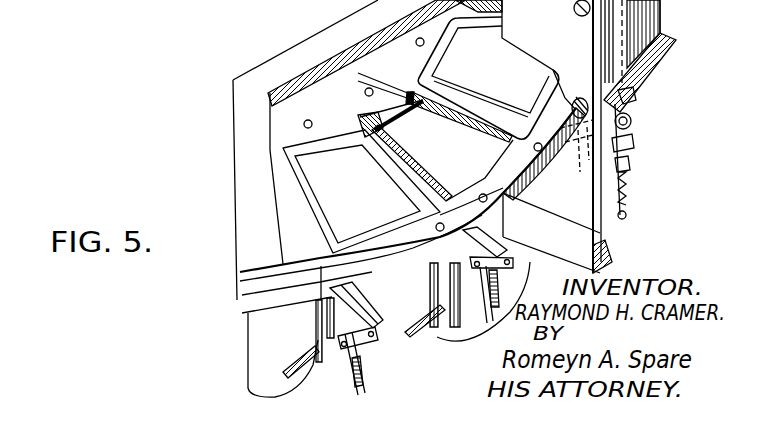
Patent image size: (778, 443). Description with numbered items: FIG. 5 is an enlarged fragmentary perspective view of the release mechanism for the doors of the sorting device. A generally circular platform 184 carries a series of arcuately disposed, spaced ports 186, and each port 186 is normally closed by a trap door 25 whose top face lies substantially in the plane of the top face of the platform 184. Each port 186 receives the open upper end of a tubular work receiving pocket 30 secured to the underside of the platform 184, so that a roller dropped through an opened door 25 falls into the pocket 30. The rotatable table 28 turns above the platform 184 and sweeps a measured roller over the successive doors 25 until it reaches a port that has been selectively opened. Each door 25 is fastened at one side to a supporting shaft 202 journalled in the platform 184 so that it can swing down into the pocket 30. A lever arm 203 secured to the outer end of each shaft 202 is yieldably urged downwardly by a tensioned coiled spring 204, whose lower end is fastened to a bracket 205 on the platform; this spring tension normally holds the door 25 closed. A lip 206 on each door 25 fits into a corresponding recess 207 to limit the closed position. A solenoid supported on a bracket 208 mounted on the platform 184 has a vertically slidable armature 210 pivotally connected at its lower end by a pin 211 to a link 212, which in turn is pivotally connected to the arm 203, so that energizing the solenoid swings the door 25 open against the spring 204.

The trap door 25 is at (417, 155).
The rotatable table 28 is at (254, 285).
The tubular work receiving pocket 30 is at (255, 335).
The platform 184 is at (290, 127).
The ports 186 is at (327, 150).
The supporting shaft 202 is at (370, 155).
The lever arm 203 is at (363, 344).
The tensioned coiled spring 204 is at (366, 372).
The bracket 205 is at (350, 378).
The lip 206 is at (478, 180).
The recess 207 is at (467, 122).
The bracket 208 is at (539, 55).
The armature 210 is at (636, 97).
The pin 211 is at (632, 125).
The link 212 is at (400, 240).